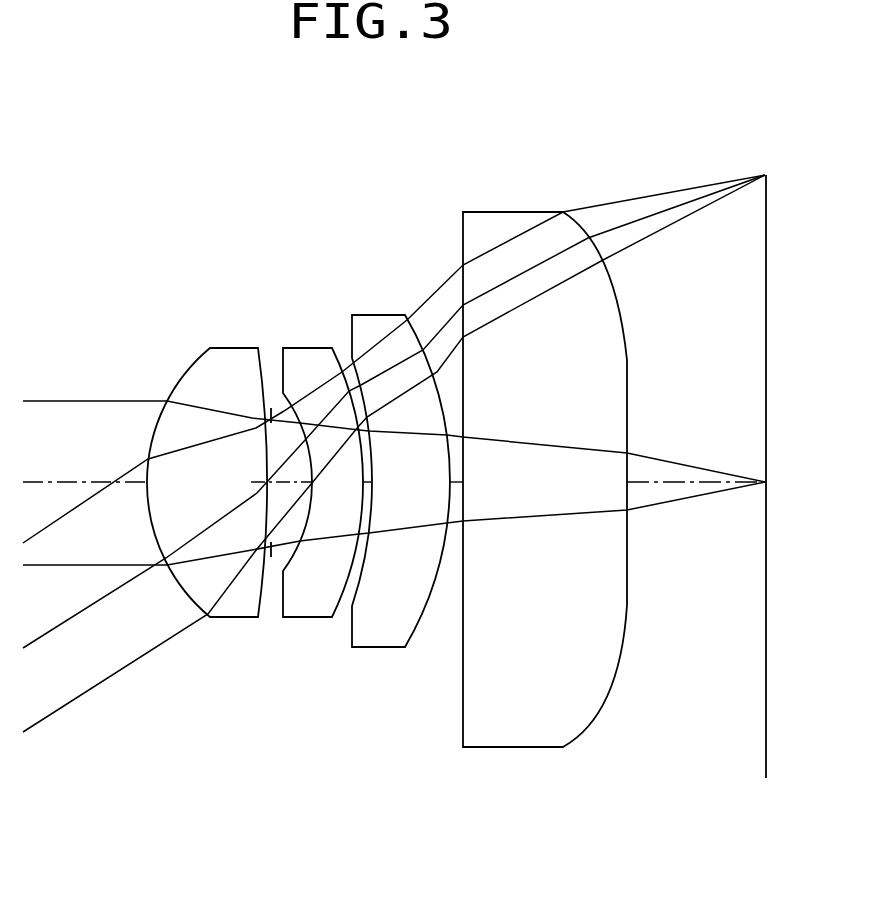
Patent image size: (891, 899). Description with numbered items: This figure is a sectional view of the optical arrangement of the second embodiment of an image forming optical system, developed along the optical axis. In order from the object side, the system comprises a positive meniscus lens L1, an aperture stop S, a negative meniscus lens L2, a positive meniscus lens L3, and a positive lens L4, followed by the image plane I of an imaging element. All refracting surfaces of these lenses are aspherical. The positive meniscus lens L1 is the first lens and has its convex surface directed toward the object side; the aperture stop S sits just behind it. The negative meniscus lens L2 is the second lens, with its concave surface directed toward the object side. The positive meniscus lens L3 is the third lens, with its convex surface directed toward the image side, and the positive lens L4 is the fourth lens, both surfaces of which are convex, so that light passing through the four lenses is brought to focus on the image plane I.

The positive meniscus lens L1 is at (237, 618).
The negative meniscus lens L2 is at (307, 618).
The positive meniscus lens L3 is at (375, 648).
The positive lens L4 is at (525, 748).
The aperture stop S is at (271, 557).
The image plane I is at (767, 767).